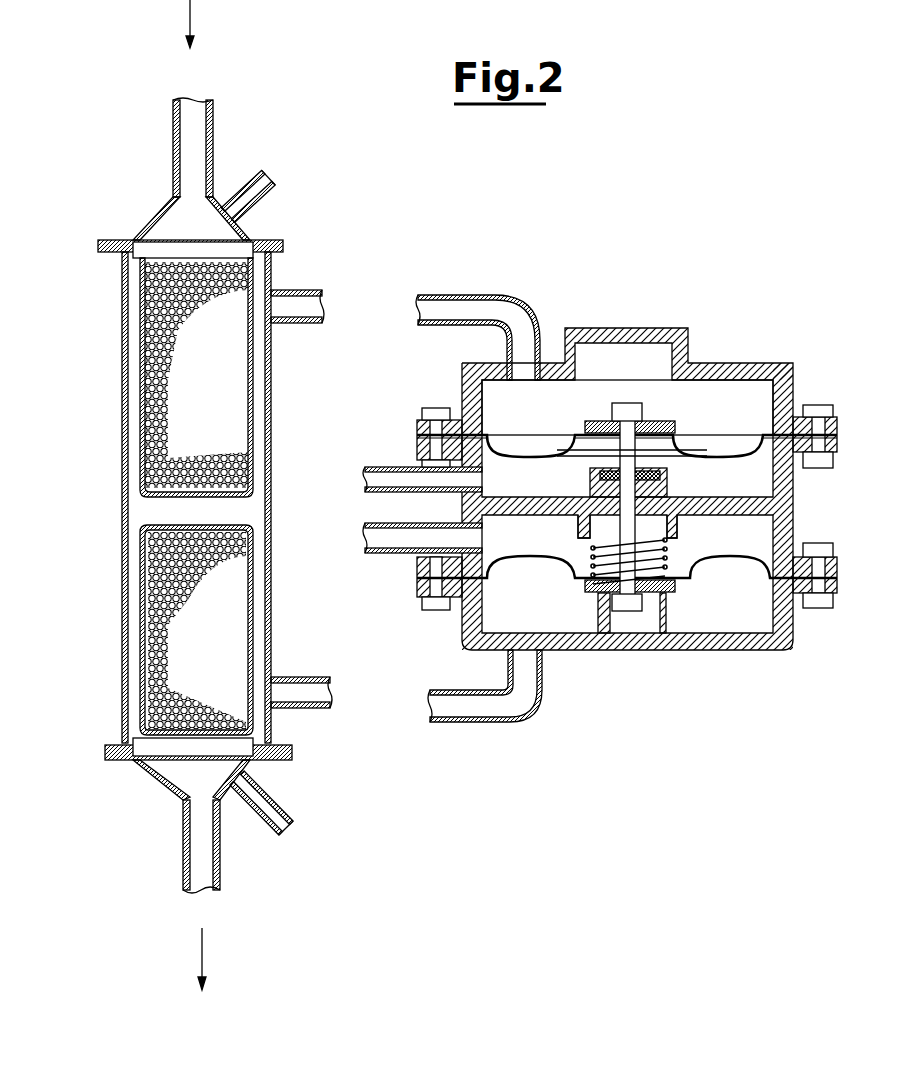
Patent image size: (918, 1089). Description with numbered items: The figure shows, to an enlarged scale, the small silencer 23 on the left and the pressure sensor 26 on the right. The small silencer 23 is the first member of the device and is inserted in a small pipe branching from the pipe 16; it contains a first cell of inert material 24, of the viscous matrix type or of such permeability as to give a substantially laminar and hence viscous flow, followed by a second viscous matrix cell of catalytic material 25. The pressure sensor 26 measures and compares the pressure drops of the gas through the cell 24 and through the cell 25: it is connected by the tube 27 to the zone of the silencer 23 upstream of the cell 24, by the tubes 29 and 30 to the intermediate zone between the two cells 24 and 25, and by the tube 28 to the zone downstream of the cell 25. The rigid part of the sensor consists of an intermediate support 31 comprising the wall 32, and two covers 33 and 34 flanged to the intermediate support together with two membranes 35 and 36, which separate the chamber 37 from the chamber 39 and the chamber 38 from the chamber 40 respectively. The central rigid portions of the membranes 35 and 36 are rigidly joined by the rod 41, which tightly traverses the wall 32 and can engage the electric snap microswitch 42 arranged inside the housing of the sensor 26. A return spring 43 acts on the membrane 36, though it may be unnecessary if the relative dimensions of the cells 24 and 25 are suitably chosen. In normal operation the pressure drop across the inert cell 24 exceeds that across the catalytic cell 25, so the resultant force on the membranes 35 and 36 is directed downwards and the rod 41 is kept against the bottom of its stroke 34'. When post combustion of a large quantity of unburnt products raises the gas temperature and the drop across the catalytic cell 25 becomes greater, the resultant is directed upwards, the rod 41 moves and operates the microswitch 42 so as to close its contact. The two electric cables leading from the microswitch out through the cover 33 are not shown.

The pipe 16 is at (173, 136).
The first member 23 is at (117, 466).
The first cell of inert material 24 is at (178, 393).
The second viscous matrix cell of catalytic material 25 is at (185, 650).
The pressure sensor 26 is at (768, 662).
The tube 27 is at (246, 192).
The tube 28 is at (247, 822).
The tube 29 is at (304, 290).
The tube 30 is at (302, 677).
The intermediate support 31 is at (786, 527).
The wall 32 is at (728, 500).
The cover 33 is at (737, 365).
The cover 34 is at (617, 626).
The bottom of stroke 34' is at (632, 645).
The membrane 35 is at (550, 457).
The membrane 36 is at (722, 565).
The chamber 37 is at (755, 392).
The chamber 38 is at (492, 525).
The chamber 39 is at (757, 470).
The chamber 40 is at (550, 625).
The rod 41 is at (640, 440).
The electric snap microswitch 42 is at (650, 330).
The return spring 43 is at (597, 560).